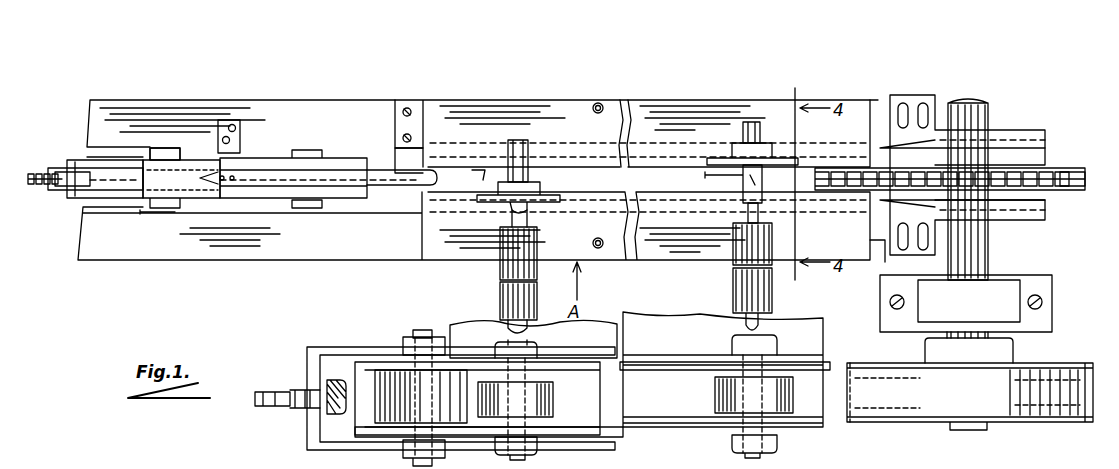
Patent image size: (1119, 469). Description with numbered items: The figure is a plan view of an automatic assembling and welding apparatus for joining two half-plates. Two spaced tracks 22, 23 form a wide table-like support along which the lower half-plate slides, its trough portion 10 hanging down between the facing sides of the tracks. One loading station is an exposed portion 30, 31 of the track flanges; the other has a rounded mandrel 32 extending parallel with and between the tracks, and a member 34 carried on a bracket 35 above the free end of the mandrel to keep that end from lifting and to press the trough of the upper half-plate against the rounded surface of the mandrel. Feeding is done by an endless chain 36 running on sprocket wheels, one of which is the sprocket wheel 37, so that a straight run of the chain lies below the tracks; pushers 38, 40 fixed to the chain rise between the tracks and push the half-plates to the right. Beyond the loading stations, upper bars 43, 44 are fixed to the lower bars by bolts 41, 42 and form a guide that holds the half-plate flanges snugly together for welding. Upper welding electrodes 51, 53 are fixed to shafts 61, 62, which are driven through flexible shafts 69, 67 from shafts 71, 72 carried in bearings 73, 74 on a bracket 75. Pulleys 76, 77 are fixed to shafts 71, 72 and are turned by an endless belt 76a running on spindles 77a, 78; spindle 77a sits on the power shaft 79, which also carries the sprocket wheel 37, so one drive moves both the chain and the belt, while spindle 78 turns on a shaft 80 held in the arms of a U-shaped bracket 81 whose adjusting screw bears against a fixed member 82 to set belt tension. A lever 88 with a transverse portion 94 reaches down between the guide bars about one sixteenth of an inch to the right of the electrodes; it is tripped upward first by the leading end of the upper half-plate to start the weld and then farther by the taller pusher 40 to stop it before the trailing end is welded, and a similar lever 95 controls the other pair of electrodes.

The trough portion 10 is at (185, 185).
The track 22 is at (340, 88).
The track 23 is at (290, 262).
The exposed flange portion 30 is at (178, 212).
The exposed flange portion 31 is at (188, 145).
The rounded mandrel 32 is at (248, 168).
The member 34 is at (382, 170).
The bracket 35 is at (400, 110).
The endless chain 36 is at (1040, 160).
The sprocket wheel 37 is at (1078, 158).
The pusher 38 is at (135, 190).
The pusher 40 is at (134, 160).
The bolt 41 is at (602, 104).
The bolt 42 is at (598, 250).
The upper bar 43 is at (853, 240).
The upper bar 44 is at (858, 112).
The upper welding electrode 51 is at (545, 196).
The upper welding electrode 53 is at (725, 156).
The shaft 61 is at (505, 140).
The shaft 62 is at (760, 128).
The flexible shaft 67 is at (772, 298).
The flexible shaft 69 is at (500, 295).
The shaft 71 is at (537, 348).
The shaft 72 is at (777, 345).
The bearing 73 is at (537, 447).
The bearing 74 is at (777, 446).
The bracket 75 is at (595, 437).
The pulley 76 is at (570, 395).
The endless belt 76a is at (655, 410).
The pulley 77 is at (722, 392).
The spindle 77a is at (1013, 350).
The spindle 78 is at (410, 425).
The power shaft 79 is at (980, 252).
The shaft 80 is at (422, 330).
The U-shaped bracket 81 is at (325, 345).
The fixed member 82 is at (330, 408).
The lever 88 is at (705, 175).
The transverse portion 94 is at (762, 180).
The lever 95 is at (470, 180).